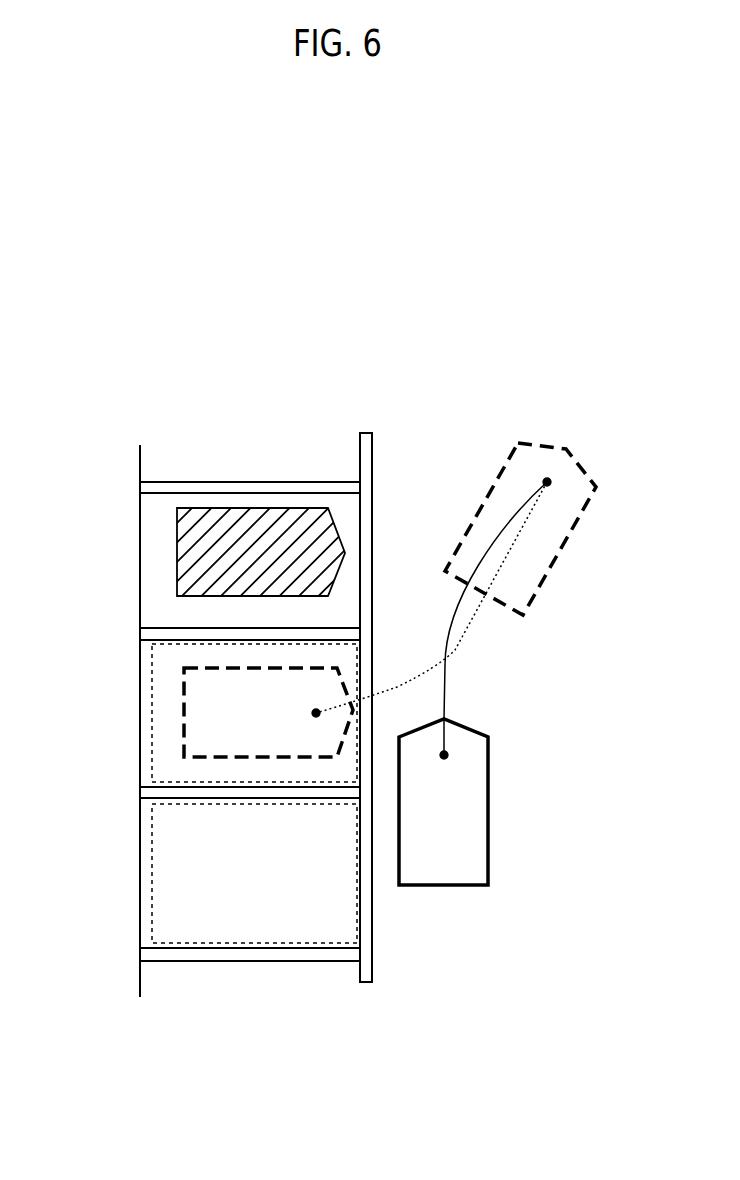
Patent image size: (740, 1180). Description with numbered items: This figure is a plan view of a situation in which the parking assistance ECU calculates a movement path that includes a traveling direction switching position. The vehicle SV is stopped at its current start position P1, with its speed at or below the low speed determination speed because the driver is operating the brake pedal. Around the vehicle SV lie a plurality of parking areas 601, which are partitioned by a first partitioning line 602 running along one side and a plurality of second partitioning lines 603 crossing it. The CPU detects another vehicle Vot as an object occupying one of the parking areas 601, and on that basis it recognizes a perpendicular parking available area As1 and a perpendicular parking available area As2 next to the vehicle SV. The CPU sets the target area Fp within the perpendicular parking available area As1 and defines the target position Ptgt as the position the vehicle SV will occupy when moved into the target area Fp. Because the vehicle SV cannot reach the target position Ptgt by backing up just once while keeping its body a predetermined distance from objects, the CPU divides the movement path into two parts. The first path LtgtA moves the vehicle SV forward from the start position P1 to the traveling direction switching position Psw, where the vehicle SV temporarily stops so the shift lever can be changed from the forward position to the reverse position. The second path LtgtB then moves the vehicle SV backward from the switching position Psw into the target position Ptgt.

The parking area 601 is at (157, 590).
The first partitioning line 602 is at (365, 447).
The second partitioning line 603 is at (283, 482).
The other vehicle Vot is at (177, 549).
The perpendicular parking available area As1 is at (152, 697).
The target area Fp is at (184, 727).
The target position Ptgt is at (316, 713).
The perpendicular parking available area As2 is at (152, 840).
The vehicle SV is at (488, 833).
The start position P1 is at (444, 755).
The first path LtgtA is at (445, 673).
The second path LtgtB is at (473, 620).
The traveling direction switching position Psw is at (547, 482).